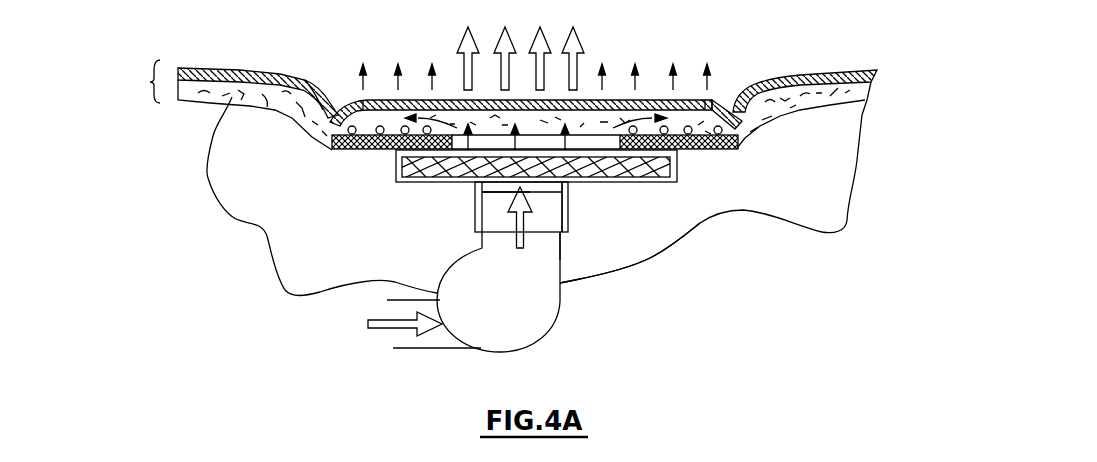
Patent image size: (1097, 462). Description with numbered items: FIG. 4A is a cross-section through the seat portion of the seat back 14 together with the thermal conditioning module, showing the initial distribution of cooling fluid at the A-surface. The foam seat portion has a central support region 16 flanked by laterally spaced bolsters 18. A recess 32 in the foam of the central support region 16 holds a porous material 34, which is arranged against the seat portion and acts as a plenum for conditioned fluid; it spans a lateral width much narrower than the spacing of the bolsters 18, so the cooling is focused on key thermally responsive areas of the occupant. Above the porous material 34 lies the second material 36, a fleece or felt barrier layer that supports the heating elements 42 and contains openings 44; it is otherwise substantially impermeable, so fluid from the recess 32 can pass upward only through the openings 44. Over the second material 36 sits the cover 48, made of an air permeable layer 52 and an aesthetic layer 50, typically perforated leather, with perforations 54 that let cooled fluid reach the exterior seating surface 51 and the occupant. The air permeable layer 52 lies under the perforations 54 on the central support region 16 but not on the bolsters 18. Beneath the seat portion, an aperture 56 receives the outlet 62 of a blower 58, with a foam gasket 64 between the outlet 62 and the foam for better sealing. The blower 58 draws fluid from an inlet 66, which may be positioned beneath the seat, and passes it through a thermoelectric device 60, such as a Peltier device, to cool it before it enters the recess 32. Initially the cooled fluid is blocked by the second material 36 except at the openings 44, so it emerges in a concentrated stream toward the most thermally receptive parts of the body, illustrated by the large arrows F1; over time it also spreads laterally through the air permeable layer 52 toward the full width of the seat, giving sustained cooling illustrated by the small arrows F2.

The seat back 14 is at (882, 162).
The central support region 16 is at (693, 208).
The bolsters 18 is at (827, 123).
The recess 32 is at (670, 182).
The porous material 34 is at (400, 168).
The second material 36 is at (728, 150).
The heating elements 42 is at (401, 129).
The openings 44 is at (615, 138).
The cover 48 is at (148, 82).
The aesthetic layer 50 is at (223, 79).
The exterior seating surface 51 is at (727, 93).
The air permeable layer 52 is at (214, 134).
The perforations 54 is at (359, 98).
The aperture 56 is at (481, 200).
The blower 58 is at (528, 322).
The thermoelectric device 60 is at (490, 220).
The outlet 62 is at (552, 241).
The foam gasket 64 is at (568, 217).
The inlet 66 is at (393, 348).
The large arrows F1 is at (474, 67).
The small arrows F2 is at (430, 87).